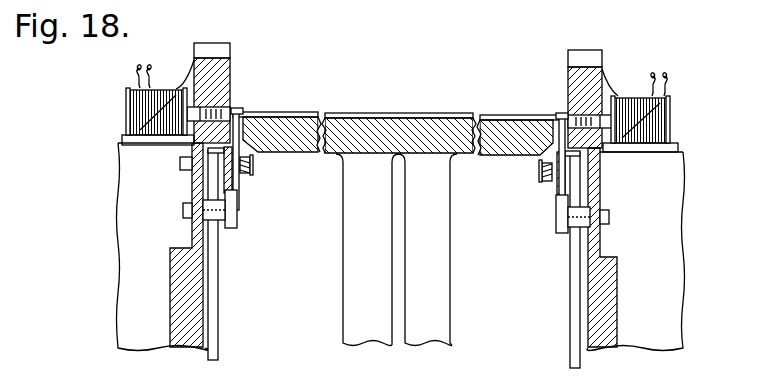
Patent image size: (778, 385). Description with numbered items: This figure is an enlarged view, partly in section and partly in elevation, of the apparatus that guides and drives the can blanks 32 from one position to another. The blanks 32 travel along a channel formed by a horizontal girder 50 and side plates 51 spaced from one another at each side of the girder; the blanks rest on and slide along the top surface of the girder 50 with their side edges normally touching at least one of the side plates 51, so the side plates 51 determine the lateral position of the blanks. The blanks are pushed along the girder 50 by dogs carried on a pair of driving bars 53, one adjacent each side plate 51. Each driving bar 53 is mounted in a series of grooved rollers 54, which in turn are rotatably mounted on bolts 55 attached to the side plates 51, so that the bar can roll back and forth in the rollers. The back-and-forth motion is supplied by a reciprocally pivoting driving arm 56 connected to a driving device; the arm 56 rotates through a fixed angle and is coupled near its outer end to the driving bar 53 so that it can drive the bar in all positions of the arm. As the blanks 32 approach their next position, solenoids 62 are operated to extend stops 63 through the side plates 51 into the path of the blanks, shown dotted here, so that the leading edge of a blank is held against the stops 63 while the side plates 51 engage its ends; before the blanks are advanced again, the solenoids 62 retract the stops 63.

The blanks 32 is at (308, 112).
The horizontal girder 50 is at (433, 127).
The side plates 51 is at (222, 72).
The driving bars 53 is at (232, 190).
The grooved rollers 54 is at (225, 222).
The bolts 55 is at (193, 228).
The driving arm 56 is at (216, 330).
The solenoids 62 is at (140, 104).
The stops 63 is at (208, 110).